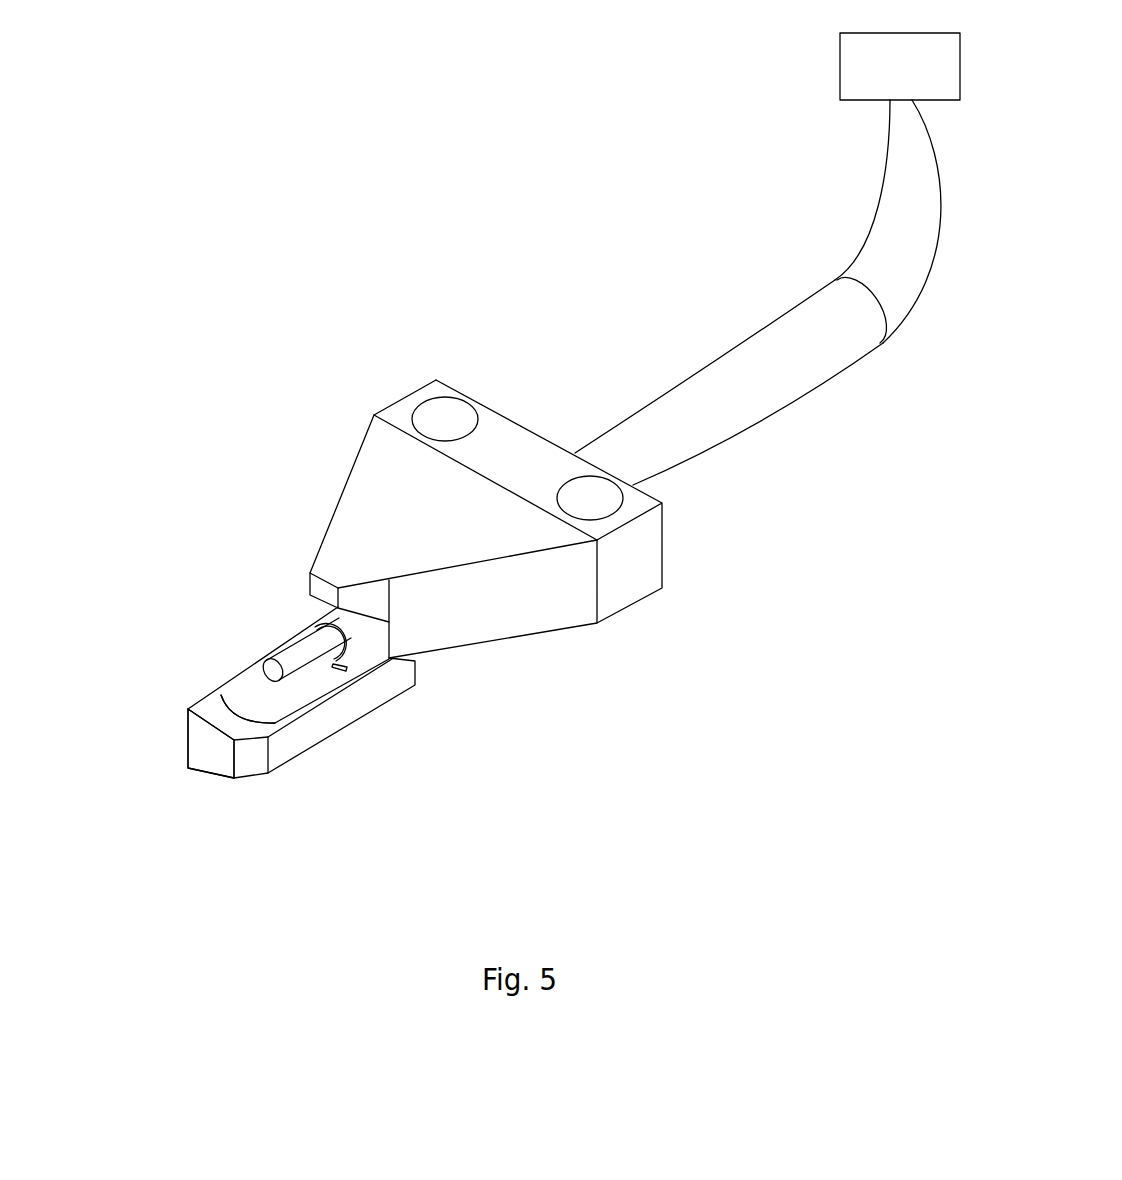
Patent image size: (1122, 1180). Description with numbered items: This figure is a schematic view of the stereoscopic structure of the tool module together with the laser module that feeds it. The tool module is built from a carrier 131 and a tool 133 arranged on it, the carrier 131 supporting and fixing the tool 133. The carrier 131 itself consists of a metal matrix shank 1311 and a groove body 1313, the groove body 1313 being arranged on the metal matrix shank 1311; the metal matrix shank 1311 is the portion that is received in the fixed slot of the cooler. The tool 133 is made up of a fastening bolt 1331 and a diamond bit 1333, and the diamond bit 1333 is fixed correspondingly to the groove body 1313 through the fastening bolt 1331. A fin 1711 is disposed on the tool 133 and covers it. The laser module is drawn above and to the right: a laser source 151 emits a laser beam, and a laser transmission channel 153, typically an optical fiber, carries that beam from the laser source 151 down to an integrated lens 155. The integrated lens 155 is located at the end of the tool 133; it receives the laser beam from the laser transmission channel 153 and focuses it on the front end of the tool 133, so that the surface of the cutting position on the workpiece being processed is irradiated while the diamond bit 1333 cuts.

The carrier 131 is at (342, 733).
The metal matrix shank 1311 is at (298, 738).
The groove body 1313 is at (329, 696).
The tool 133 is at (182, 758).
The fastening bolt 1331 is at (322, 628).
The diamond bit 1333 is at (210, 753).
The laser source 151 is at (848, 70).
The laser transmission channel 153 is at (722, 392).
The integrated lens 155 is at (268, 664).
The fin 1711 is at (403, 508).